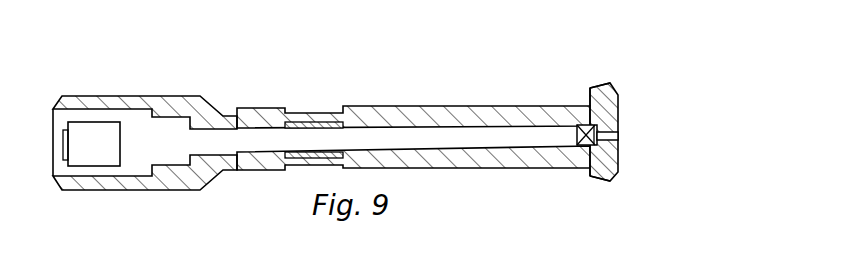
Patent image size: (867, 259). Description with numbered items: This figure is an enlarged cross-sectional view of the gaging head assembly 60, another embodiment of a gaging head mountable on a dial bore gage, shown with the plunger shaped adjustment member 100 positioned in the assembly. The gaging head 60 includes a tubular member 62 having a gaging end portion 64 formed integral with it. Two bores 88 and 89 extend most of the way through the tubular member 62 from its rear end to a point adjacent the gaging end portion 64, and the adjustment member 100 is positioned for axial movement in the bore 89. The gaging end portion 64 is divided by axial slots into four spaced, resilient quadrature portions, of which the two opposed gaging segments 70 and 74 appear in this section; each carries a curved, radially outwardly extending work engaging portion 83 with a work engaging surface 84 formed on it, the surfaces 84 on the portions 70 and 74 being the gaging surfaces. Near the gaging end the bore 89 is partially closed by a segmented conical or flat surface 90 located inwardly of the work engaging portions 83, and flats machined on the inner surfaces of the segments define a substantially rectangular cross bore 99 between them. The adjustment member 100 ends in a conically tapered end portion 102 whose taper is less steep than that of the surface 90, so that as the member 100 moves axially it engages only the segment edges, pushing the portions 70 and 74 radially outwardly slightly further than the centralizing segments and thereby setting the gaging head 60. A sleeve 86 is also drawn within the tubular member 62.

The gaging head assembly 60 is at (504, 76).
The tubular member 62 is at (147, 191).
The gaging end portion 64 is at (636, 97).
The quadrature portion 70 is at (375, 107).
The quadrature portion 74 is at (441, 160).
The work engaging portion 83 is at (592, 92).
The work engaging surface 84 is at (603, 83).
The sleeve 86 is at (306, 114).
The bore 88 is at (97, 110).
The bore 89 is at (440, 127).
The segmented conical surface 90 is at (587, 169).
The cross bore 99 is at (612, 136).
The adjustment member 100 is at (527, 140).
The conically tapered end portion 102 is at (599, 128).